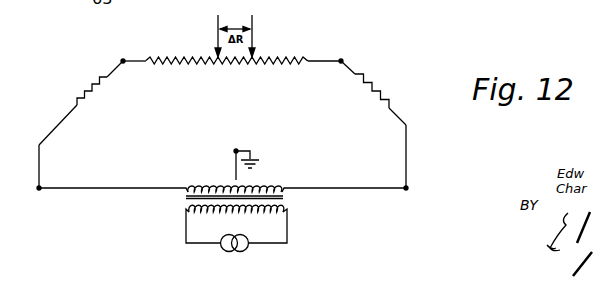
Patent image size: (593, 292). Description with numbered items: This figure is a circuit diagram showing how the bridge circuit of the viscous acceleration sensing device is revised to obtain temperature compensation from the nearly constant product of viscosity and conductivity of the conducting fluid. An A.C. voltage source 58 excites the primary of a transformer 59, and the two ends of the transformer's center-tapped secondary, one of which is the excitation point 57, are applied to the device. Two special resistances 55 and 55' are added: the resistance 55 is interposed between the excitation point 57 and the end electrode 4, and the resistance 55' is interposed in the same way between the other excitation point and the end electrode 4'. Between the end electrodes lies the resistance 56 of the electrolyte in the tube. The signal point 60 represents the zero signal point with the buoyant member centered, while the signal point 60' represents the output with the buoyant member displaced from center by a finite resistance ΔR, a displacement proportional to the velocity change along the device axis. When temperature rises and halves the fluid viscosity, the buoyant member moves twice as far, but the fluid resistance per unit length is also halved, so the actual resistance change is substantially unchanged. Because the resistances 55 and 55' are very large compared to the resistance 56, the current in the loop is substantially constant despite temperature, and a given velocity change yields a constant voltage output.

The end electrode 4 is at (130, 53).
The end electrode 4' is at (328, 52).
The special resistance 55 is at (81, 103).
The special resistance 55' is at (373, 93).
The resistance 56 is at (300, 64).
The excitation point 57 is at (222, 158).
The A.C. voltage source 58 is at (245, 250).
The transformer 59 is at (284, 200).
The signal point 60 is at (254, 29).
The signal point 60' is at (222, 29).